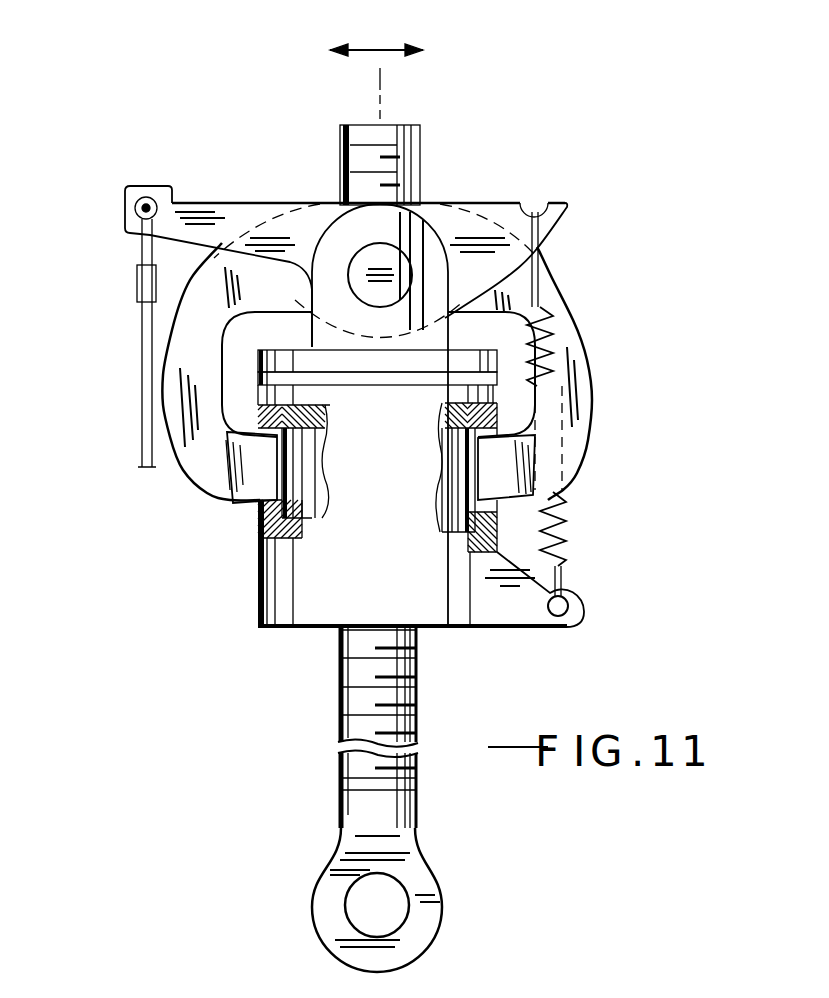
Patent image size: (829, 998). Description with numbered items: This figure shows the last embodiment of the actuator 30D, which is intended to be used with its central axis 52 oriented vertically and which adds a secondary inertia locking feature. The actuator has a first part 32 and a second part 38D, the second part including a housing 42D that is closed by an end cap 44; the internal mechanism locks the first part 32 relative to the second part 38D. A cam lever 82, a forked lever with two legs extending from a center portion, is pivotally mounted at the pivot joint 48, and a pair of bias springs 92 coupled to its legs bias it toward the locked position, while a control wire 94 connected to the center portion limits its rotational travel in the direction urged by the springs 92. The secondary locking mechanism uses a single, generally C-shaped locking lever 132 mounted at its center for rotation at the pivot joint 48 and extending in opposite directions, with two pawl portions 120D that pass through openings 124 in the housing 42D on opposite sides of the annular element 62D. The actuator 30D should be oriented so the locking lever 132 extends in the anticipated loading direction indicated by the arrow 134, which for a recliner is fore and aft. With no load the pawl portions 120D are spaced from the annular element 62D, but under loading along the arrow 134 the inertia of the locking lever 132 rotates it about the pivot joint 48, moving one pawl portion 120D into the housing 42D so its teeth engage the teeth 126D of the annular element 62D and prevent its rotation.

The arrow 134 is at (392, 50).
The central axis 52 is at (383, 82).
The actuator 30D is at (492, 170).
The cam lever 82 is at (228, 192).
The control wire 94 is at (140, 405).
The pivot joint 48 is at (352, 250).
The locking lever 132 is at (568, 292).
The end cap 44 is at (497, 358).
The second part 38D is at (250, 617).
The housing 42D is at (295, 632).
The pawl portions 120D is at (250, 483).
The annular element 62D is at (262, 498).
The teeth 126D is at (263, 540).
The bias springs 92 is at (563, 520).
The openings 124 is at (497, 520).
The first part 32 is at (432, 666).